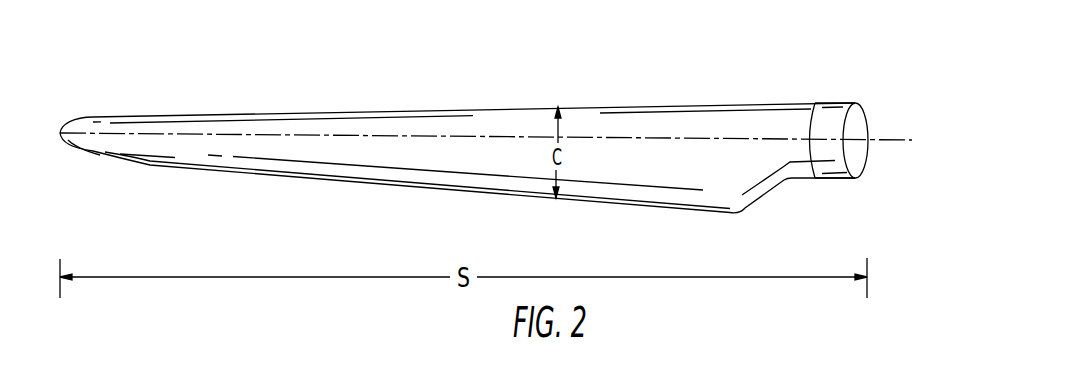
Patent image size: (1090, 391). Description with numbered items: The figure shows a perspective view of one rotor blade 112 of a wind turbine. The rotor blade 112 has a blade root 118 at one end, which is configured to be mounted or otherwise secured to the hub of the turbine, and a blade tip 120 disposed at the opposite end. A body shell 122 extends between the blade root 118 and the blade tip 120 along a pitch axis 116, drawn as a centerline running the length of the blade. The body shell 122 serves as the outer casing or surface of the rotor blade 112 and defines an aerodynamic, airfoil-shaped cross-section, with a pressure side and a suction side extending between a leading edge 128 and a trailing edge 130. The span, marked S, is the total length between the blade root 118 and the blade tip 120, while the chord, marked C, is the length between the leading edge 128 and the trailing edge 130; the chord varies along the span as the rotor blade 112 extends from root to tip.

The rotor blade 112 is at (654, 45).
The pitch axis 116 is at (885, 138).
The blade root 118 is at (833, 180).
The blade tip 120 is at (71, 145).
The body shell 122 is at (748, 122).
The leading edge 128 is at (658, 105).
The trailing edge 130 is at (655, 207).